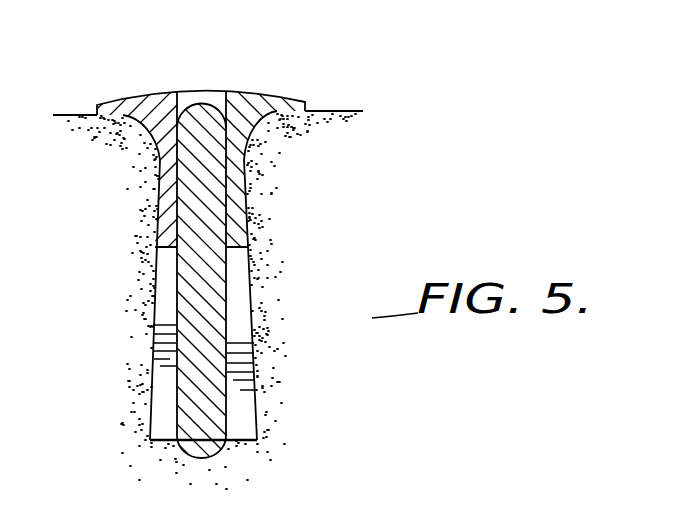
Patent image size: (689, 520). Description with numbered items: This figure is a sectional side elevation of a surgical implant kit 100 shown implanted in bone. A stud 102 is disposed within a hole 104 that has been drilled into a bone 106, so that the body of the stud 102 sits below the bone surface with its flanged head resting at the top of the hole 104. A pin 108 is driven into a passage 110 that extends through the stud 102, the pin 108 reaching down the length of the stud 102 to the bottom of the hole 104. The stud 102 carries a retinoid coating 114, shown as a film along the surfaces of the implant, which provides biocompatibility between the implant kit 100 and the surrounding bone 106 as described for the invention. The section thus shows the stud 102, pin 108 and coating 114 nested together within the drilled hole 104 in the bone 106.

The surgical implant kit 100 is at (292, 247).
The stud 102 is at (125, 99).
The hole 104 is at (158, 410).
The bone 106 is at (341, 111).
The pin 108 is at (218, 422).
The passage 110 is at (212, 96).
The retinoid coating 114 is at (247, 213).